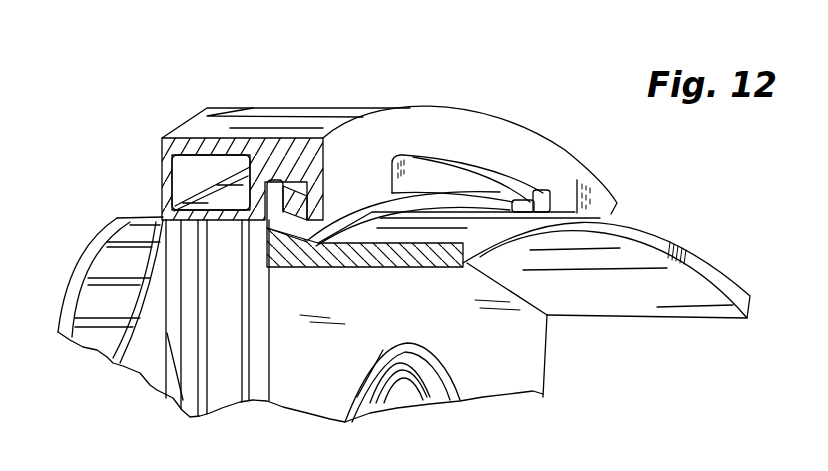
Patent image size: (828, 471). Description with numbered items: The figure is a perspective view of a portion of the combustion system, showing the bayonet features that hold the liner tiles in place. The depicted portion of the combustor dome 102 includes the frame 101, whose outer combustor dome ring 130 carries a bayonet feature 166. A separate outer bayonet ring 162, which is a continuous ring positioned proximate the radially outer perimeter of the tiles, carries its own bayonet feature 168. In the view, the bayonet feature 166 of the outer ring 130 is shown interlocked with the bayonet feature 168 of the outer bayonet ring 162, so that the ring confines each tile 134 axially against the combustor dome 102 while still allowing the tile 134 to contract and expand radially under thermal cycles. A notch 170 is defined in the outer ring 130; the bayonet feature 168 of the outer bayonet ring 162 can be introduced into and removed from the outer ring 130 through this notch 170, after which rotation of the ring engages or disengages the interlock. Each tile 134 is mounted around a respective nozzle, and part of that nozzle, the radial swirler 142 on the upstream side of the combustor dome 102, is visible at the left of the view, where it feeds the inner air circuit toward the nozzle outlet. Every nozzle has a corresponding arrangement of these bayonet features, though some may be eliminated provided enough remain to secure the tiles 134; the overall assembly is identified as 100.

The fuel injector assembly 100 is at (96, 114).
The combustor dome 102 is at (162, 137).
The outer combustor dome ring 130 is at (242, 179).
The frame 101 is at (272, 103).
The bayonet feature of outer bayonet ring 168 is at (283, 180).
The bayonet feature of outer ring 166 is at (325, 138).
The notch 170 is at (467, 167).
The outer bayonet ring 162 is at (703, 262).
The tile 134 is at (533, 365).
The radial swirler 142 is at (68, 277).